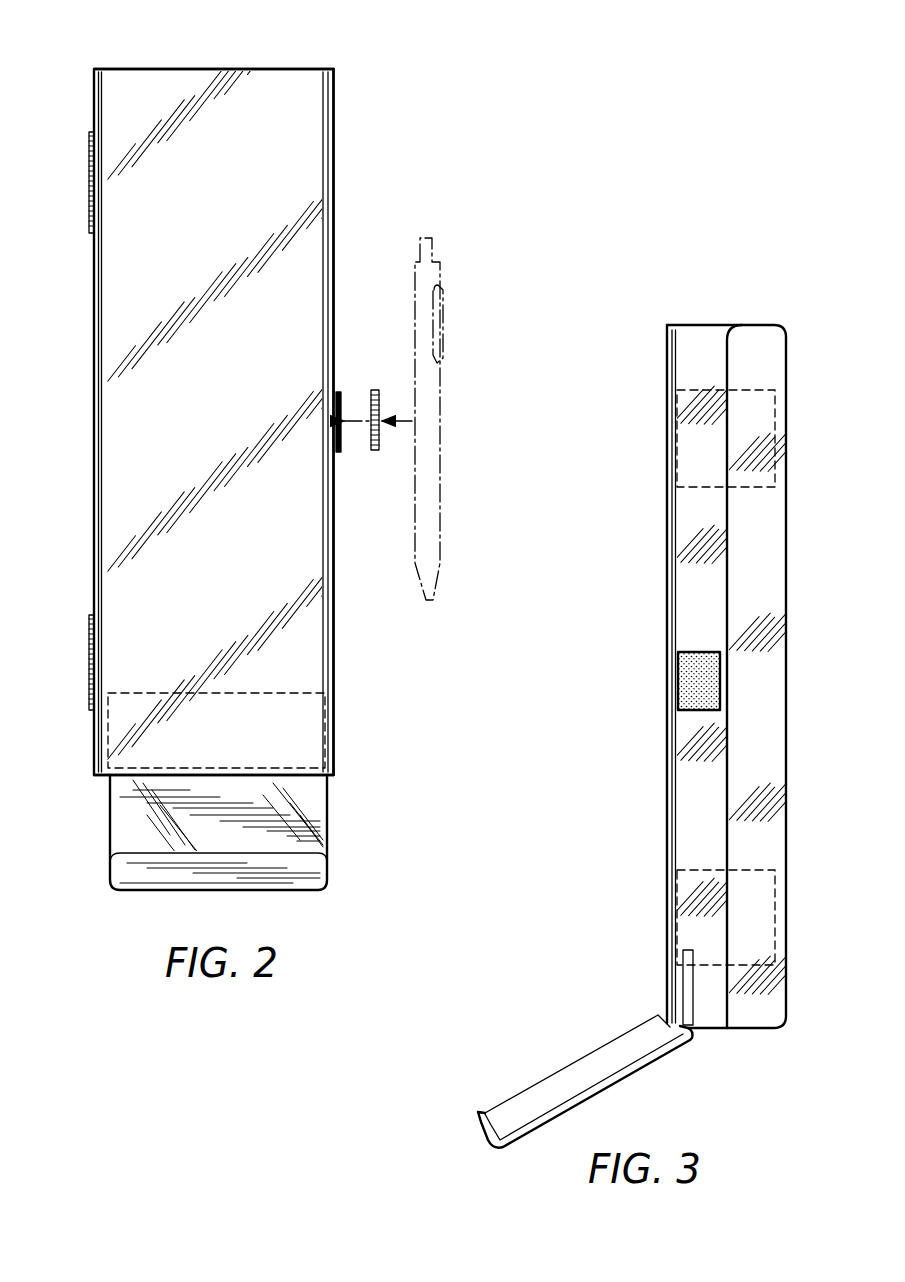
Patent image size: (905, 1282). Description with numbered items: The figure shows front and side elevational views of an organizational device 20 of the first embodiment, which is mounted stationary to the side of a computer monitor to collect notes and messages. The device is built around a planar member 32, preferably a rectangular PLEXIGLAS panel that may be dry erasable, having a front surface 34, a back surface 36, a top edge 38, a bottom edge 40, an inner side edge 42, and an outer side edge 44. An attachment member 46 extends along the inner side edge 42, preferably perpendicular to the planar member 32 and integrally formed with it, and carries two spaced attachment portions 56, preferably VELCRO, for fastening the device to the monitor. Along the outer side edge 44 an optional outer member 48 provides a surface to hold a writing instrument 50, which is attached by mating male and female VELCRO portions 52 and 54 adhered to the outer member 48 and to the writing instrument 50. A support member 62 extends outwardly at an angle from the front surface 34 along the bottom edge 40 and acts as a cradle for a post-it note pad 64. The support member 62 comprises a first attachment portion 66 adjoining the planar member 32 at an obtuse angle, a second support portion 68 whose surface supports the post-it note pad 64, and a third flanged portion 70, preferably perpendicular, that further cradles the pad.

In FIG. 2, the organizational device 20 is at (350, 83).
In FIG. 3, the organizational device 20 is at (727, 302).
In FIG. 2, the planar member 32 is at (274, 148).
In FIG. 3, the planar member 32 is at (662, 580).
In FIG. 2, the front surface 34 is at (137, 410).
In FIG. 3, the front surface 34 is at (666, 362).
In FIG. 2, the back surface 36 is at (136, 112).
In FIG. 3, the back surface 36 is at (688, 358).
In FIG. 2, the top edge 38 is at (205, 68).
In FIG. 3, the top edge 38 is at (667, 326).
In FIG. 2, the bottom edge 40 is at (337, 777).
In FIG. 3, the bottom edge 40 is at (692, 1044).
In FIG. 2, the inner side edge 42 is at (90, 505).
In FIG. 2, the outer side edge 44 is at (340, 674).
In FIG. 2, the attachment member 46 is at (86, 770).
In FIG. 3, the attachment member 46 is at (789, 676).
In FIG. 3, the outer member 48 is at (732, 330).
In FIG. 2, the writing instrument 50 is at (446, 268).
In FIG. 2, the male VELCRO portion 52 is at (342, 392).
In FIG. 3, the male VELCRO portion 52 is at (679, 683).
In FIG. 2, the female VELCRO portion 54 is at (375, 455).
In FIG. 2, the attachment portion 56 is at (89, 185).
In FIG. 3, the attachment portion 56 is at (748, 488).
In FIG. 2, the support member 62 is at (336, 832).
In FIG. 3, the support member 62 is at (549, 1104).
In FIG. 3, the post-it note pad 64 is at (577, 1065).
In FIG. 3, the first attachment portion 66 is at (693, 986).
In FIG. 3, the second support portion 68 is at (602, 1090).
In FIG. 3, the third flanged portion 70 is at (479, 1122).